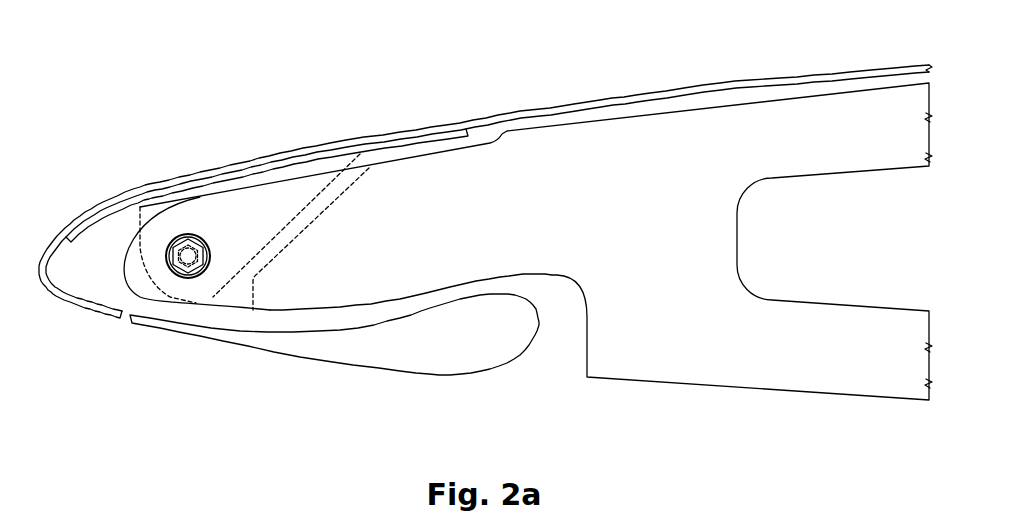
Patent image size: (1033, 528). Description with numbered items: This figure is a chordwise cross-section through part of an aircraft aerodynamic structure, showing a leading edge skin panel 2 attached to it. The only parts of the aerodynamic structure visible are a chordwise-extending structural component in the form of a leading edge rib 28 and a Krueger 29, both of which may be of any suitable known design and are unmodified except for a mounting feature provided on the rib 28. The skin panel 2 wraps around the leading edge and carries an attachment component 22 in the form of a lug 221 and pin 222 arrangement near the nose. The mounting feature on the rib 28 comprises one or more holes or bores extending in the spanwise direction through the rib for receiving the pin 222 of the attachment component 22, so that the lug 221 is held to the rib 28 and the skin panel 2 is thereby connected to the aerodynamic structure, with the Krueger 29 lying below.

The LE skin panel 2 is at (236, 163).
The attachment component 22 is at (209, 255).
The lug 221 is at (213, 215).
The pin 222 is at (188, 257).
The leading edge rib 28 is at (671, 307).
The Krueger 29 is at (360, 340).